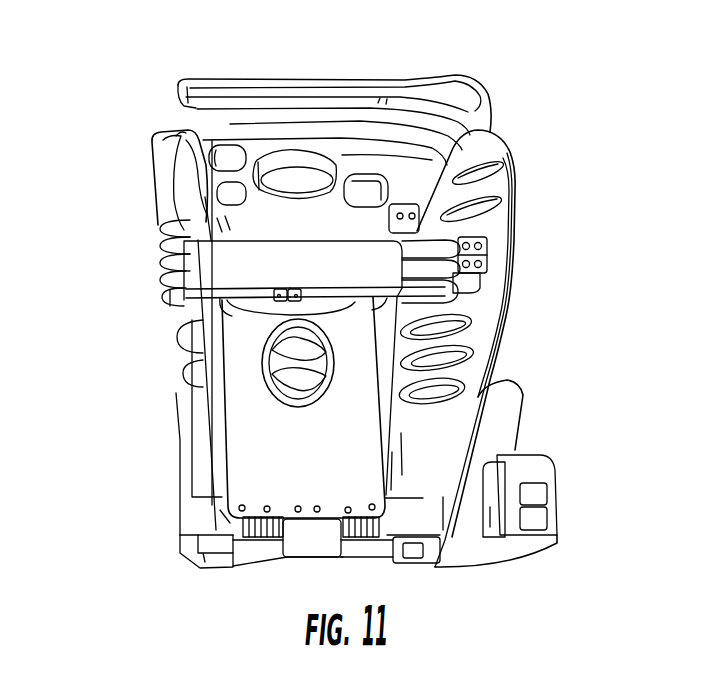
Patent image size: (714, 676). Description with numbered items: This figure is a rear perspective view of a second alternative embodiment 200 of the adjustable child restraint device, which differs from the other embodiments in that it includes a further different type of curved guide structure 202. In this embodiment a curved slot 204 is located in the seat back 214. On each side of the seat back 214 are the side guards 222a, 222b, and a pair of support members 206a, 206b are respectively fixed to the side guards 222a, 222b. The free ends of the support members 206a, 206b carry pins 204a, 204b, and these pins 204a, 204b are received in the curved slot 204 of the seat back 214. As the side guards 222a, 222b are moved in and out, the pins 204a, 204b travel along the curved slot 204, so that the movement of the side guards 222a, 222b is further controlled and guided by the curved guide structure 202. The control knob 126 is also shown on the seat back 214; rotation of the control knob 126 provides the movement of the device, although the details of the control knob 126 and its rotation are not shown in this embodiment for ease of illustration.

The second alternative embodiment 200 is at (560, 112).
The curved guide structure 202 is at (520, 240).
The curved slot 204 is at (203, 385).
The pin 204a is at (297, 289).
The pin 204b is at (278, 289).
The support member 206a is at (363, 288).
The support member 206b is at (237, 293).
The control knob 126 is at (296, 405).
The seat back 214 is at (355, 437).
The side guard 222a is at (505, 319).
The side guard 222b is at (183, 330).